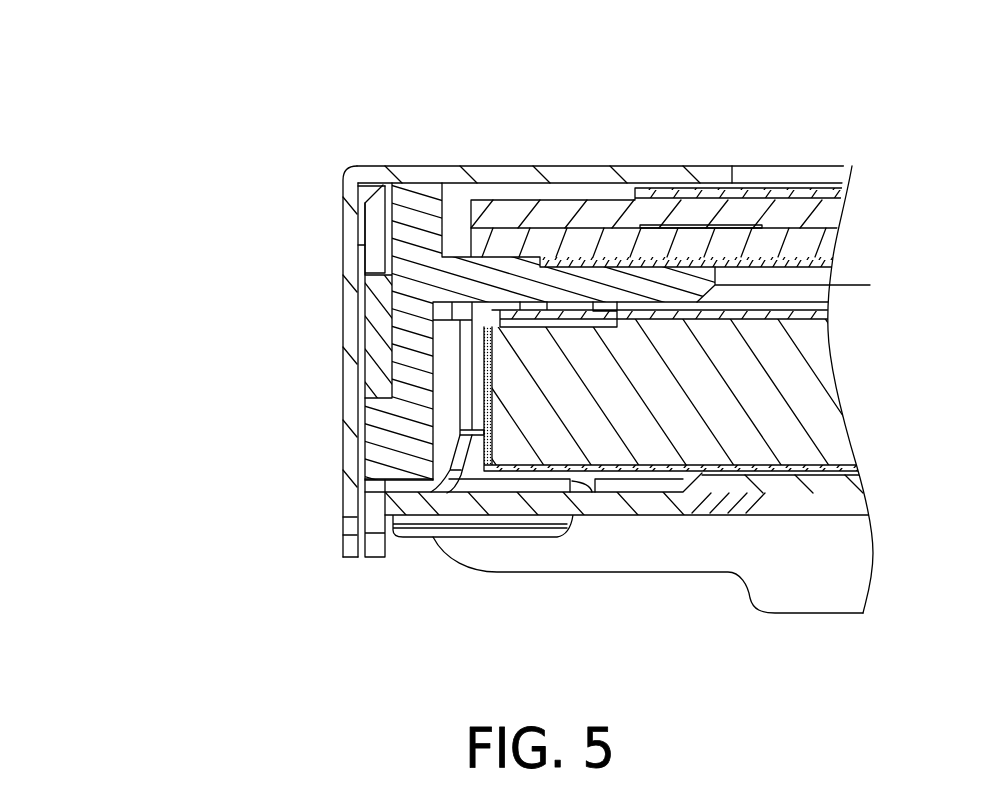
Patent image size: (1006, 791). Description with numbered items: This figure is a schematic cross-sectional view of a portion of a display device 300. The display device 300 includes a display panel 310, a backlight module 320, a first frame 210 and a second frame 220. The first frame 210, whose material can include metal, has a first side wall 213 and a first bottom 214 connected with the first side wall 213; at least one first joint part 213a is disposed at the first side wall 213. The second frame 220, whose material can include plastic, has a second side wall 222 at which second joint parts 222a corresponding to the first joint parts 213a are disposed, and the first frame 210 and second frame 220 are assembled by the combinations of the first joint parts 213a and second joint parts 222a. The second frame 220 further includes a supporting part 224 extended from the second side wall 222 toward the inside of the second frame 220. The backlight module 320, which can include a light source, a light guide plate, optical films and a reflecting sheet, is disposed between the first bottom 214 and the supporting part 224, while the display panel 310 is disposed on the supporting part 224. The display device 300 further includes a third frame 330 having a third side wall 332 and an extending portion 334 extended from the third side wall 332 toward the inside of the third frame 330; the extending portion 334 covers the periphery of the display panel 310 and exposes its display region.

The display device 300 is at (943, 690).
The third frame 330 is at (549, 288).
The third side wall 332 is at (346, 233).
The extending portion 334 is at (603, 128).
The display panel 310 is at (466, 203).
The backlight module 320 is at (468, 452).
The second frame 220 is at (492, 370).
The second side wall 222 is at (408, 373).
The second joint part 222a is at (380, 442).
The supporting part 224 is at (378, 330).
The first side wall 213 is at (500, 268).
The first joint part 213a is at (361, 484).
The first bottom 214 is at (663, 485).
The first frame 210 is at (500, 504).